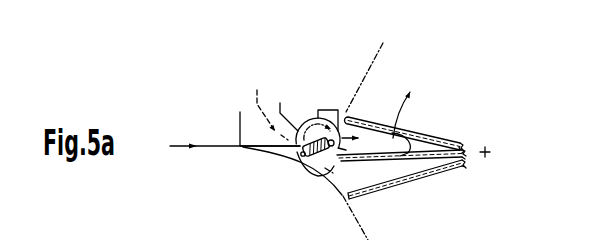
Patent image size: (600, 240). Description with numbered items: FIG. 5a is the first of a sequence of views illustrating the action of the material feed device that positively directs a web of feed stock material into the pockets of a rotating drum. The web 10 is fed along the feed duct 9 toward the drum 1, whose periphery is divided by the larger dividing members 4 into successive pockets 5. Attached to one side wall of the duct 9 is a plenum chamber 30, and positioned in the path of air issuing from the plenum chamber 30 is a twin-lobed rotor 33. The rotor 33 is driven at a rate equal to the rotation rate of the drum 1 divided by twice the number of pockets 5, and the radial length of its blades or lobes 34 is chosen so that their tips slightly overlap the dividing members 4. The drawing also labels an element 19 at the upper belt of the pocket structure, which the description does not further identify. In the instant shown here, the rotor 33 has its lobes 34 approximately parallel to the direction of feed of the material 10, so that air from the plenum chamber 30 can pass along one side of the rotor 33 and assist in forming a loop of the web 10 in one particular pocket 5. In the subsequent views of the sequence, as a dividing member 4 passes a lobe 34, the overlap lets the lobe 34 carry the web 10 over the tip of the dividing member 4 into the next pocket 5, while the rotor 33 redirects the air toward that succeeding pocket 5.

The drum 1 is at (367, 69).
The dividing member 4 is at (411, 163).
The pocket 5 is at (433, 163).
The feed duct 9 is at (290, 157).
The web 10 is at (203, 148).
The upper conveyor belt 19 is at (368, 140).
The plenum chamber 30 is at (240, 113).
The twin-lobed rotor 33 is at (313, 158).
The lobe 34 is at (303, 160).